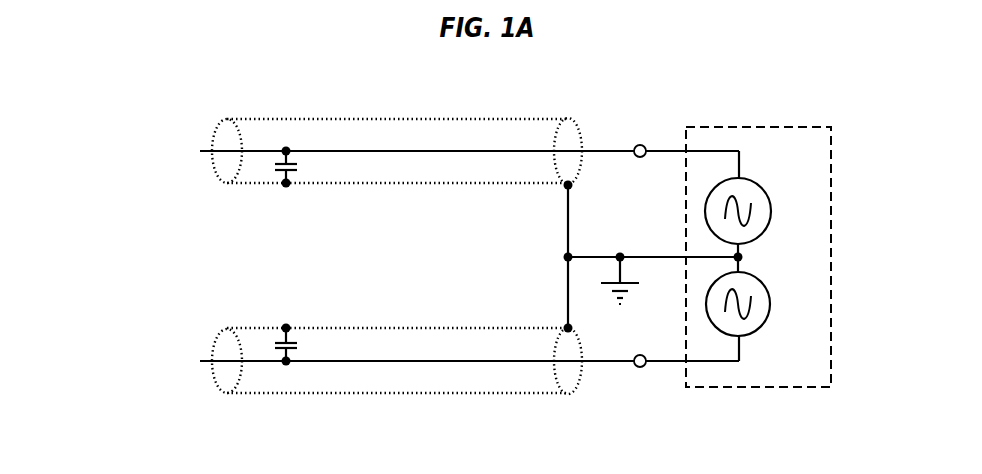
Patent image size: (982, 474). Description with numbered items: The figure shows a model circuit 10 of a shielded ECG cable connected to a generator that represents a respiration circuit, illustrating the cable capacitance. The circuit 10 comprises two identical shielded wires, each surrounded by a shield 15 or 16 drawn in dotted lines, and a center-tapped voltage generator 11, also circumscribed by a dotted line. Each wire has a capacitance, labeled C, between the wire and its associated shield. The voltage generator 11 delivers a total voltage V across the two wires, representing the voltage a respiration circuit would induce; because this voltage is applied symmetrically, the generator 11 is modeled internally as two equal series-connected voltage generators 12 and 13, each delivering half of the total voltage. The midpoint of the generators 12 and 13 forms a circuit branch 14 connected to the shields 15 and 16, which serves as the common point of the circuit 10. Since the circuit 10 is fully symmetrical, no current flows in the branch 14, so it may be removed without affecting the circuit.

The circuit 10 is at (120, 342).
The center-tapped voltage generator 11 is at (832, 187).
The voltage generator 12 is at (752, 175).
The voltage generator 13 is at (750, 335).
The circuit branch 14 is at (678, 255).
The shield 15 is at (555, 118).
The shield 16 is at (548, 397).